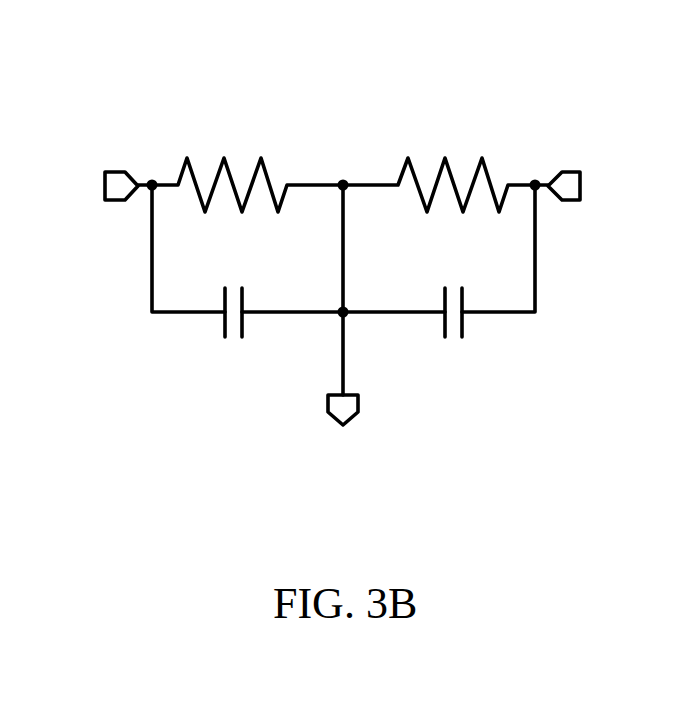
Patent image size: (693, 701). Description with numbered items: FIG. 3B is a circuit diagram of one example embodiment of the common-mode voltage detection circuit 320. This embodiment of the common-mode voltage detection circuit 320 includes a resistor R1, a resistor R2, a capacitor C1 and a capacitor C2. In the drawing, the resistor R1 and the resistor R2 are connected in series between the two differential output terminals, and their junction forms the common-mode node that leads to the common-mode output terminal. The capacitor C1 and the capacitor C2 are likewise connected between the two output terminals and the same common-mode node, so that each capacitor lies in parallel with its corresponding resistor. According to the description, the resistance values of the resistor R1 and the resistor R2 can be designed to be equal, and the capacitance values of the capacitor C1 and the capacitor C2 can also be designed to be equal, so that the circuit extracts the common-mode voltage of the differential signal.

The common-mode voltage detection circuit 320 is at (351, 78).
The resistor R1 is at (247, 164).
The resistor R2 is at (439, 164).
The capacitor C1 is at (231, 292).
The capacitor C2 is at (453, 292).